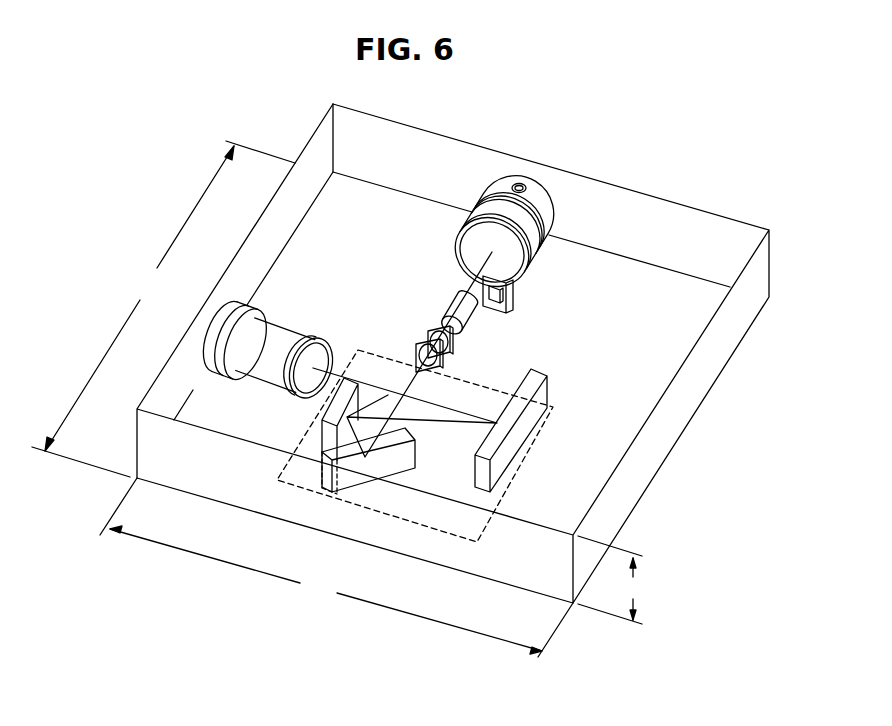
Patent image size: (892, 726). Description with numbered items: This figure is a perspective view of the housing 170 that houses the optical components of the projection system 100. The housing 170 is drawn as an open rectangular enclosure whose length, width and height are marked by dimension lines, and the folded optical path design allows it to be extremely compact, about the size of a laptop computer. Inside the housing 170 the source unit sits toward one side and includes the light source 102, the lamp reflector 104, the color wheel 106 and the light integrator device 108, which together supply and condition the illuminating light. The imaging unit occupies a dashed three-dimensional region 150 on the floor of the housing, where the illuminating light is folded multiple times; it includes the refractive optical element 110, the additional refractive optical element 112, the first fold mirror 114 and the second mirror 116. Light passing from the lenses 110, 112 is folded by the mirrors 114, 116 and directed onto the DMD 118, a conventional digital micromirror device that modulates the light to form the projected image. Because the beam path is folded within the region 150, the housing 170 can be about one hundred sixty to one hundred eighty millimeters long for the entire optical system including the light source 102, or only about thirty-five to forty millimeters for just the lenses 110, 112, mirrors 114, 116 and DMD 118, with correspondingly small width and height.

The projection system 100 is at (335, 258).
The light source 102 is at (527, 185).
The lamp reflector 104 is at (593, 245).
The color wheel 106 is at (513, 305).
The light integrator device 108 is at (447, 303).
The refractive optical element 110 is at (453, 345).
The additional refractive optical element 112 is at (447, 360).
The first fold mirror 114 is at (387, 463).
The second mirror 116 is at (322, 420).
The DMD 118 is at (546, 412).
The three-dimensional region 150 is at (316, 493).
The housing 170 is at (635, 300).